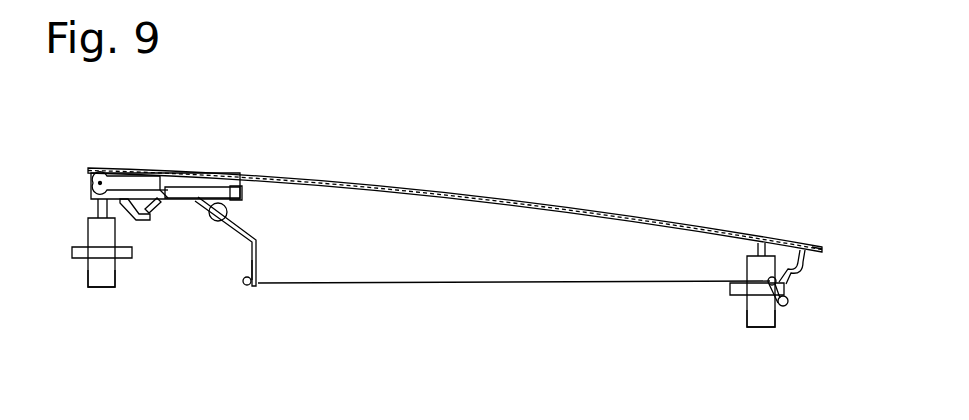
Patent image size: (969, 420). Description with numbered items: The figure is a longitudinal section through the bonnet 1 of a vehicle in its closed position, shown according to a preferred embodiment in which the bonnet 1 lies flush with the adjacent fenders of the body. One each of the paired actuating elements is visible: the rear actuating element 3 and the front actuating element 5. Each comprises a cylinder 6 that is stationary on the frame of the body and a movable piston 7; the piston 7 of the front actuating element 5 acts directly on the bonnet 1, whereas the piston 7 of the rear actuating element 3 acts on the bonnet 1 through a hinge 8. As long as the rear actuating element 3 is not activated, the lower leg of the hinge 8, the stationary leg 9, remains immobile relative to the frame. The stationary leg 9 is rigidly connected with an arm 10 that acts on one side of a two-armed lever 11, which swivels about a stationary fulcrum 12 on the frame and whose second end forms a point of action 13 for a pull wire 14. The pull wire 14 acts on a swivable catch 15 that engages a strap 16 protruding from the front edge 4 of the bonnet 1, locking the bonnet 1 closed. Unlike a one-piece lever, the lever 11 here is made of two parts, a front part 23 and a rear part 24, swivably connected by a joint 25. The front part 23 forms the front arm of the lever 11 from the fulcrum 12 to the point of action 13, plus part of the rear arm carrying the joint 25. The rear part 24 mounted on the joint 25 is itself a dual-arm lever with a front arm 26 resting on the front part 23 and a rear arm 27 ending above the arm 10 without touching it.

The bonnet 1 is at (470, 192).
The rear actuating element 3 is at (86, 272).
The front edge 4 is at (812, 247).
The front actuating element 5 is at (738, 302).
The cylinder 6 is at (107, 278).
The piston 7 is at (98, 208).
The hinge 8 is at (103, 168).
The stationary leg 9 is at (236, 188).
The arm 10 is at (145, 222).
The two-armed lever 11 is at (248, 222).
The fulcrum 12 is at (213, 219).
The point of action 13 is at (258, 286).
The pull wire 14 is at (490, 284).
The catch 15 is at (792, 279).
The strap 16 is at (796, 250).
The front part 23 is at (258, 264).
The rear part 24 is at (162, 190).
The joint 25 is at (165, 200).
The front arm 26 is at (190, 192).
The rear arm 27 is at (157, 208).